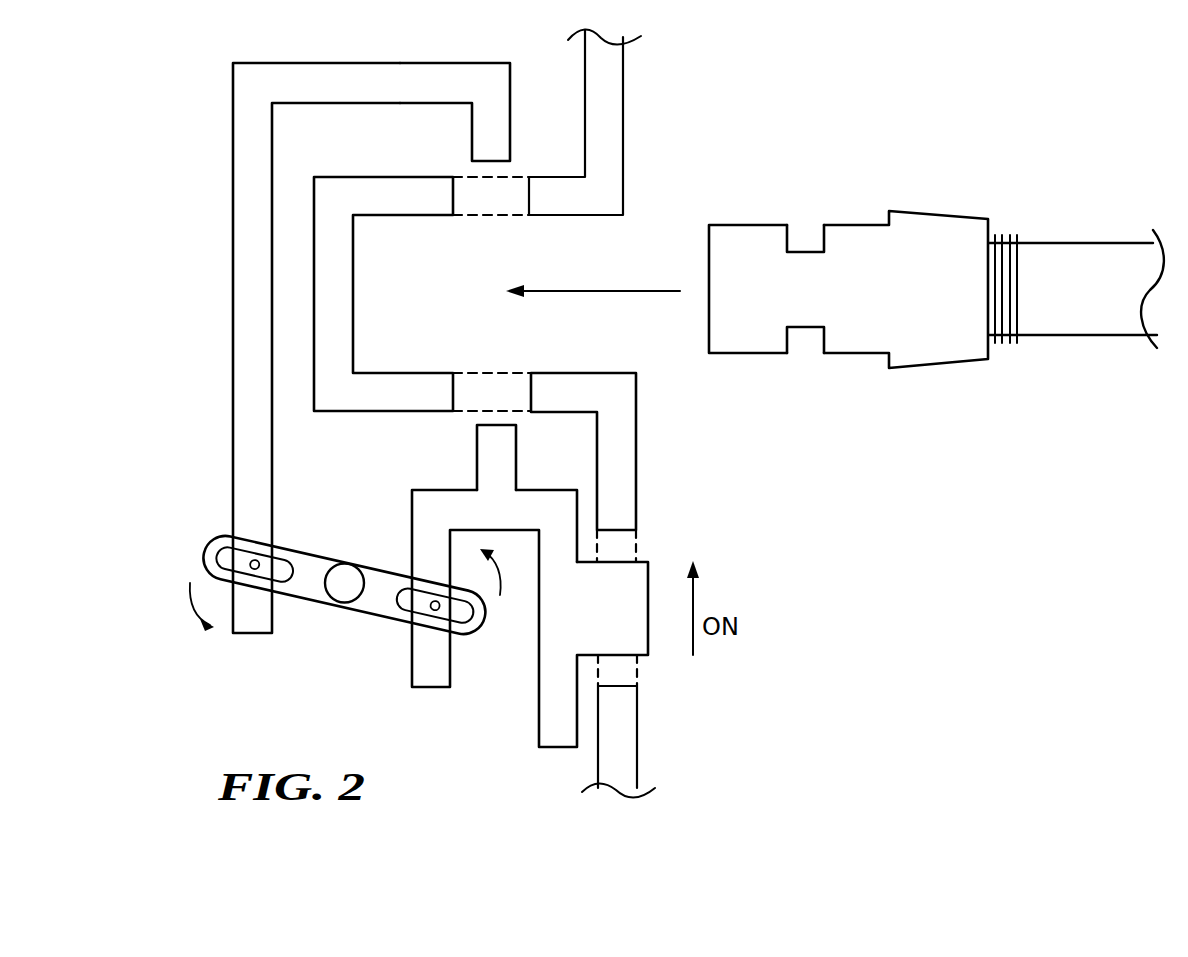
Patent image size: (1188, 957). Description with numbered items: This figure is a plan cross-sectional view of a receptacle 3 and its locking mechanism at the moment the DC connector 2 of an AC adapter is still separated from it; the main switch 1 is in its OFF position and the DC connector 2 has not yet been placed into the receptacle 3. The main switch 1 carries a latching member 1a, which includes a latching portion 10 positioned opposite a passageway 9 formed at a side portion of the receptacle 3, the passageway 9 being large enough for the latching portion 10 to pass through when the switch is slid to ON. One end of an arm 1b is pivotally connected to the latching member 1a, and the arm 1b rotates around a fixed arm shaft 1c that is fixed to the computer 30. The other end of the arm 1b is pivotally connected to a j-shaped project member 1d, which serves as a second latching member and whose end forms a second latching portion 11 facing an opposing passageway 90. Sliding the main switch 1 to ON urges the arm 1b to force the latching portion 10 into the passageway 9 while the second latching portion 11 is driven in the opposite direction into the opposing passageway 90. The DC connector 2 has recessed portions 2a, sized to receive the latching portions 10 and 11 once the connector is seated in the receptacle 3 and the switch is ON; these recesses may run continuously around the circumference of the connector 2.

The main switch 1 is at (640, 583).
The latching member 1a is at (535, 500).
The arm 1b is at (388, 607).
The arm shaft 1c is at (342, 592).
The j-shaped project member 1d is at (247, 364).
The DC connector 2 is at (853, 232).
The recessed portions 2a is at (802, 330).
The receptacle 3 is at (623, 250).
The passageway 9 is at (491, 373).
The latching portion 10 is at (486, 443).
The second latching portion 11 is at (478, 137).
The computer 30 is at (614, 83).
The opposing passageway 90 is at (490, 216).